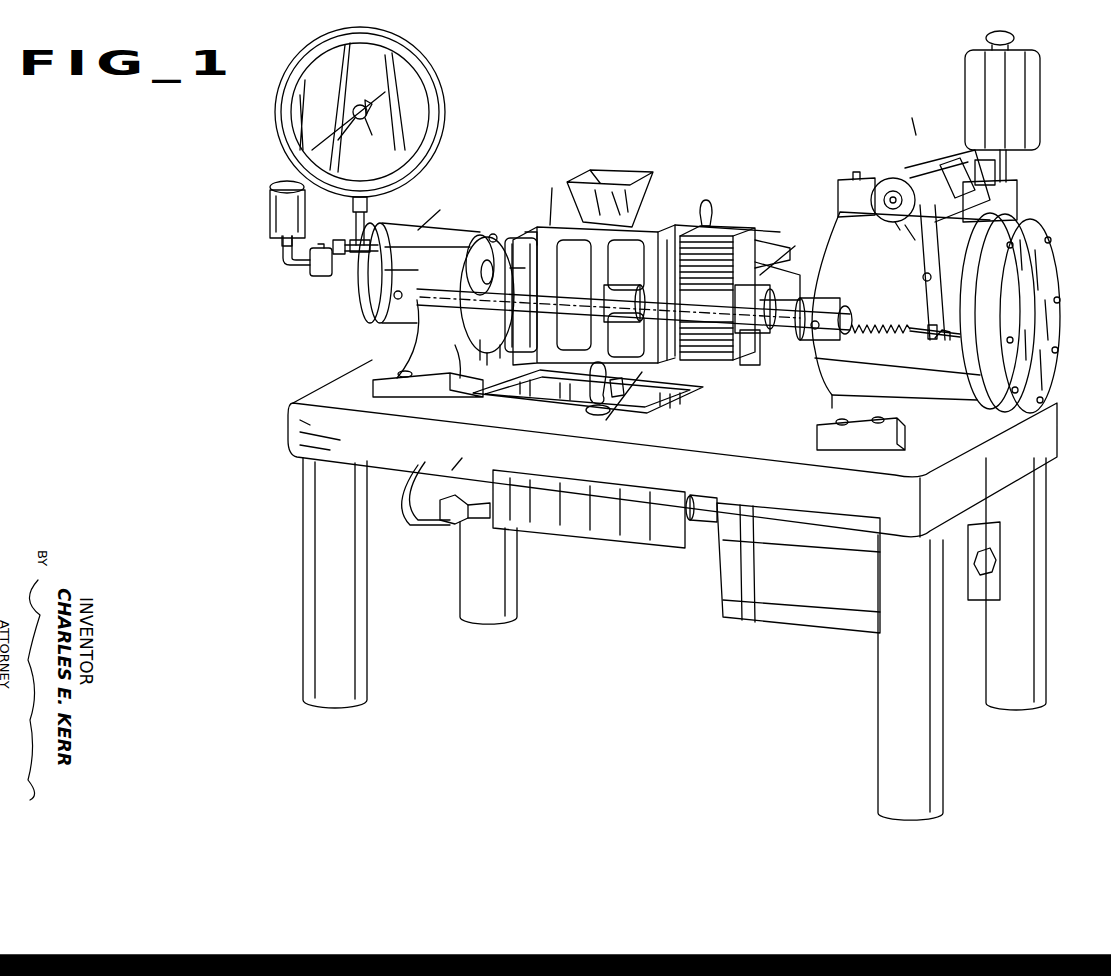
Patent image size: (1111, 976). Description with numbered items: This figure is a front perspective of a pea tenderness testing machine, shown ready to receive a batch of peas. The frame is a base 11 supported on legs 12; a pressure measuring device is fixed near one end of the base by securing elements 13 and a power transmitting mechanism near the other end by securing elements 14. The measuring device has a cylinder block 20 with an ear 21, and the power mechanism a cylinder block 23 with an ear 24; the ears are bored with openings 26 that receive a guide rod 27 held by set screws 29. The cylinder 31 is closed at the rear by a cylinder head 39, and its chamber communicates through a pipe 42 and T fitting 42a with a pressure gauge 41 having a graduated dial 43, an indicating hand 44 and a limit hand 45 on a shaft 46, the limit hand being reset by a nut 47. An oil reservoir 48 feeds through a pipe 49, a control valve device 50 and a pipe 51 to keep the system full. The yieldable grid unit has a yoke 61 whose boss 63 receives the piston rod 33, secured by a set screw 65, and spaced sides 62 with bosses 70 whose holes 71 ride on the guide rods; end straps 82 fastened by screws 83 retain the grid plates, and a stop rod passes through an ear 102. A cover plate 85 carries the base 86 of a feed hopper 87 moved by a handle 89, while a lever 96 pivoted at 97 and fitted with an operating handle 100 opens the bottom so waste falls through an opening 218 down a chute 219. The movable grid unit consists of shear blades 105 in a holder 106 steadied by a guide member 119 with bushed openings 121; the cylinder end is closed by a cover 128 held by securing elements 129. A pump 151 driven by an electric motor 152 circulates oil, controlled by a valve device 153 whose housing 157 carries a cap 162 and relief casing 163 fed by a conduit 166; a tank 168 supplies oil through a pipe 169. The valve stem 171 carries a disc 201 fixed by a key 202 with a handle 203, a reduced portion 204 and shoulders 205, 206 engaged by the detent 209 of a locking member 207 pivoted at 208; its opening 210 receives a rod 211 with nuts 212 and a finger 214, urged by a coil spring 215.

The base 11 is at (345, 392).
The legs 12 is at (312, 585).
The securing elements 13 is at (403, 373).
The securing elements 14 is at (870, 425).
The cylinder block 20 is at (420, 232).
The ear 21 is at (372, 300).
The cylinder block 23 is at (826, 248).
The ear 24 is at (800, 335).
The openings 26 is at (420, 315).
The guide rod 27 is at (497, 318).
The set screws 29 is at (400, 290).
The cylinder 31 is at (508, 237).
The piston rod 33 is at (480, 265).
The cylinder head 39 is at (385, 228).
The pressure gauge 41 is at (438, 108).
The pipe 42 is at (352, 206).
The T fitting 42a is at (368, 286).
The graduated dial 43 is at (400, 80).
The indicating hand 44 is at (326, 150).
The limit hand 45 is at (355, 100).
The shaft 46 is at (372, 112).
The nut 47 is at (352, 110).
The oil reservoir 48 is at (270, 213).
The pipe 49 is at (284, 262).
The control valve device 50 is at (318, 280).
The pipe 51 is at (343, 242).
The supporting yoke 61 is at (530, 232).
The sides 62 is at (585, 296).
The boss 63 is at (493, 272).
The set screw 65 is at (523, 267).
The boss 70 is at (598, 310).
The hole 71 is at (645, 298).
The end straps 82 is at (672, 245).
The screws 83 is at (672, 355).
The cover plate 85 is at (740, 232).
The base of feed hopper 86 is at (690, 228).
The feed hopper 87 is at (610, 170).
The handle 89 is at (713, 210).
The lever 96 is at (600, 412).
The pivot 97 is at (632, 398).
The operating handle 100 is at (590, 402).
The ear 102 is at (493, 233).
The shear blades 105 is at (758, 252).
The holder 106 is at (752, 366).
The guide member 119 is at (777, 276).
The bushed openings 121 is at (768, 311).
The cover 128 is at (1030, 316).
The securing elements 129 is at (1010, 270).
The pump 151 is at (412, 468).
The electric motor 152 is at (798, 568).
The control valve device 153 is at (914, 114).
The housing 157 is at (945, 163).
The cap 162 is at (915, 168).
The casing 163 is at (985, 158).
The conduit 166 is at (420, 518).
The tank 168 is at (1030, 100).
The pipe 169 is at (1008, 165).
The valve stem 171 is at (893, 196).
The disc 201 is at (856, 194).
The key 202 is at (894, 211).
The handle 203 is at (990, 50).
The reduced portion 204 is at (925, 232).
The shoulder 205 is at (990, 201).
The shoulder 206 is at (896, 228).
The locking member 207 is at (938, 245).
The pivot 208 is at (932, 277).
The detent 209 is at (908, 194).
The opening 210 is at (920, 338).
The rod 211 is at (944, 342).
The nuts 212 is at (945, 318).
The finger 214 is at (626, 335).
The coil spring 215 is at (872, 335).
The opening 218 is at (535, 396).
The chute 219 is at (605, 530).